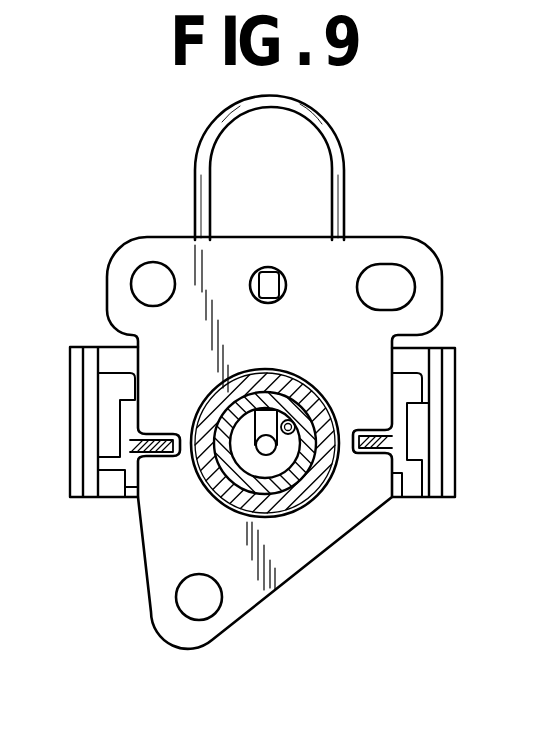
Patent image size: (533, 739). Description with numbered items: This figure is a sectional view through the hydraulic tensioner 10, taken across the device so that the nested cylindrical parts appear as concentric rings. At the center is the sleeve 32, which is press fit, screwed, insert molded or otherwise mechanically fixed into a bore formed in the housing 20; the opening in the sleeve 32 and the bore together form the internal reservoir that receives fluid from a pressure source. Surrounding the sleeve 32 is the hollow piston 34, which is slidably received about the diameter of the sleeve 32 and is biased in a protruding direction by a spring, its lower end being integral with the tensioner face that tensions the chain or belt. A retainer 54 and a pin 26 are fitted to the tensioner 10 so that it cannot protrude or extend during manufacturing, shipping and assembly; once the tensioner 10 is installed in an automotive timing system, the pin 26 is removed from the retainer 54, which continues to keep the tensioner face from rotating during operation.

The hydraulic tensioner 10 is at (448, 235).
The pin 26 is at (320, 110).
The housing 20 is at (412, 497).
The retainer 54 is at (128, 444).
The sleeve 32 is at (257, 488).
The hollow piston 34 is at (302, 497).